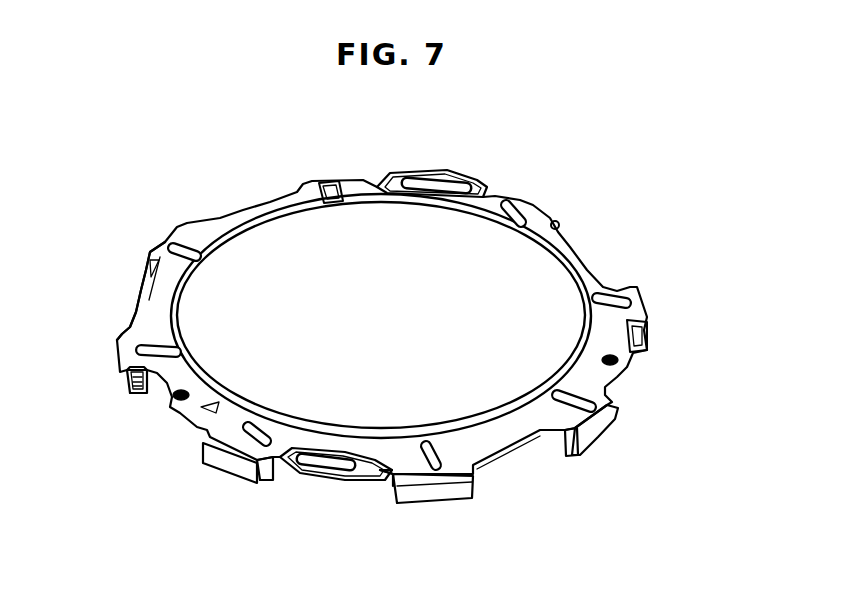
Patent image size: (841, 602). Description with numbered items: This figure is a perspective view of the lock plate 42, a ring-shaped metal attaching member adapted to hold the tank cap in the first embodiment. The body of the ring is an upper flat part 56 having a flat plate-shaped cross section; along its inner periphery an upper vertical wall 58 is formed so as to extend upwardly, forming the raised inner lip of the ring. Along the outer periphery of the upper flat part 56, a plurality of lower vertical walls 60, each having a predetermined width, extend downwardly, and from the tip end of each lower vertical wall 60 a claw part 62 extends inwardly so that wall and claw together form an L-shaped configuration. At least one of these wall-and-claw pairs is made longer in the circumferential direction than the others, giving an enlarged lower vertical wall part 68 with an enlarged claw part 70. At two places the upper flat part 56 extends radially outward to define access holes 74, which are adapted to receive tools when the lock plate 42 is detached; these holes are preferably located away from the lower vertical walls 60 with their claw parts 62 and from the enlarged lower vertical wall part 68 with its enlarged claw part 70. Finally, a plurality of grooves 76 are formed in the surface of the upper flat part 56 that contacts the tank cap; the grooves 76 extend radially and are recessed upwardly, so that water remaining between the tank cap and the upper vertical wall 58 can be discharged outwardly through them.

The lock plate 42 is at (207, 215).
The upper flat part 56 is at (153, 290).
The upper vertical wall 58 is at (193, 373).
The lower vertical wall 60 is at (222, 463).
The claw part 62 is at (263, 481).
The enlarged lower vertical wall part 68 is at (440, 487).
The enlarged claw part 70 is at (393, 497).
The access hole 74 is at (478, 178).
The groove 76 is at (613, 288).